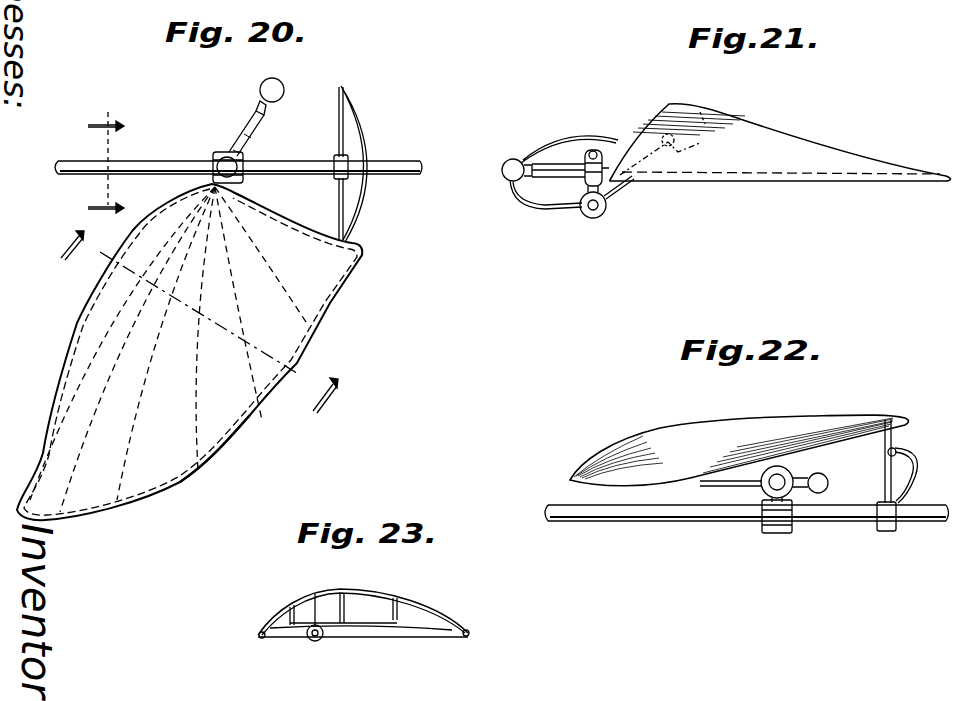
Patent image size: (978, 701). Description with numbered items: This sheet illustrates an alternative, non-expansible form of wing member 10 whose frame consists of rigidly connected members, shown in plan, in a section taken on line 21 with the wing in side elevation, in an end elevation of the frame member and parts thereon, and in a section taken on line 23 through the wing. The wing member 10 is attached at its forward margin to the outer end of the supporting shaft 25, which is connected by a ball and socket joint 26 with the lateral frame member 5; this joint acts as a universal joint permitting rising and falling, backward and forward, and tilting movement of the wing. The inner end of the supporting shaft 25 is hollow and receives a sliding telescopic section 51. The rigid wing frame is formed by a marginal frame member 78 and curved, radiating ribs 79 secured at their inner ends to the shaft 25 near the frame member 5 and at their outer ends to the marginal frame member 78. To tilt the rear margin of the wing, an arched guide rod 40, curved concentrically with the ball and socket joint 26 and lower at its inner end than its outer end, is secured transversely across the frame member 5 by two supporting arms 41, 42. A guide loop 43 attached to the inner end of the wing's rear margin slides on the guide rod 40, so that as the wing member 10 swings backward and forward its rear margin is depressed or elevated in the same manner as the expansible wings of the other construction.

In FIG. 20, the lateral frame member 5 is at (150, 158).
In FIG. 21, the lateral frame member 5 is at (589, 210).
In FIG. 22, the lateral frame member 5 is at (702, 521).
In FIG. 20, the wing member 10 is at (189, 352).
In FIG. 21, the wing member 10 is at (780, 142).
In FIG. 22, the wing member 10 is at (739, 450).
In FIG. 23, the wing member 10 is at (440, 614).
In FIG. 20, the section line 21 is at (106, 162).
In FIG. 20, the section line 23 is at (204, 316).
In FIG. 20, the supporting shaft 25 is at (250, 132).
In FIG. 21, the supporting shaft 25 is at (560, 178).
In FIG. 22, the supporting shaft 25 is at (752, 490).
In FIG. 23, the supporting shaft 25 is at (316, 641).
In FIG. 20, the ball and socket joint 26 is at (225, 152).
In FIG. 21, the ball and socket joint 26 is at (597, 158).
In FIG. 22, the ball and socket joint 26 is at (794, 474).
In FIG. 20, the guide rod 40 is at (370, 134).
In FIG. 21, the guide rod 40 is at (566, 142).
In FIG. 22, the guide rod 40 is at (918, 462).
In FIG. 20, the supporting arm 41 is at (339, 112).
In FIG. 20, the supporting arm 42 is at (338, 200).
In FIG. 21, the guide loop 43 is at (706, 118).
In FIG. 22, the guide loop 43 is at (885, 440).
In FIG. 20, the telescopic section 51 is at (259, 92).
In FIG. 21, the telescopic section 51 is at (528, 162).
In FIG. 20, the marginal frame member 78 is at (237, 430).
In FIG. 23, the marginal frame member 78 is at (467, 639).
In FIG. 20, the curved radiating ribs 79 is at (124, 411).
In FIG. 23, the curved radiating ribs 79 is at (368, 604).